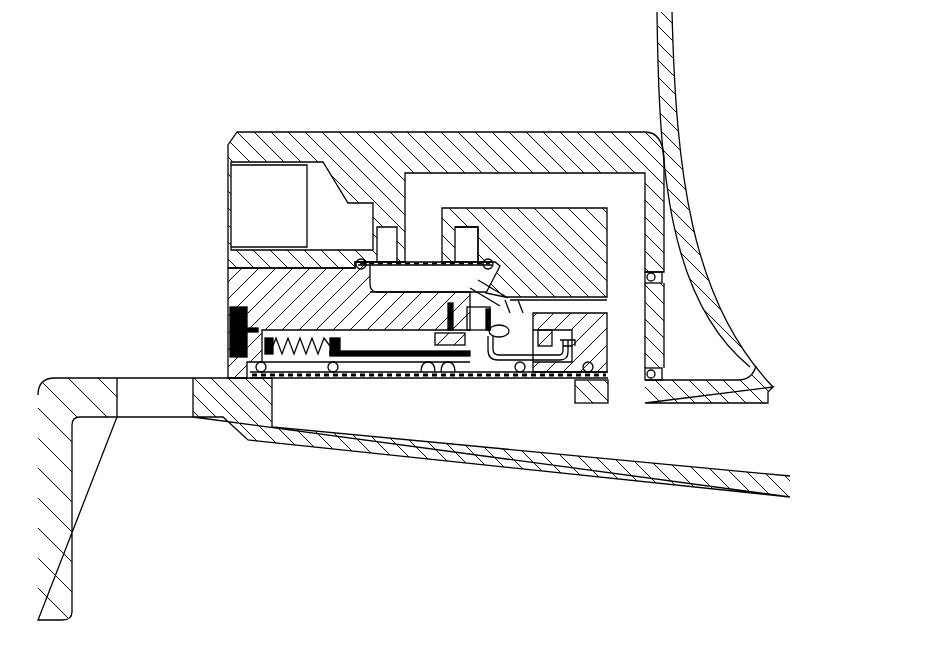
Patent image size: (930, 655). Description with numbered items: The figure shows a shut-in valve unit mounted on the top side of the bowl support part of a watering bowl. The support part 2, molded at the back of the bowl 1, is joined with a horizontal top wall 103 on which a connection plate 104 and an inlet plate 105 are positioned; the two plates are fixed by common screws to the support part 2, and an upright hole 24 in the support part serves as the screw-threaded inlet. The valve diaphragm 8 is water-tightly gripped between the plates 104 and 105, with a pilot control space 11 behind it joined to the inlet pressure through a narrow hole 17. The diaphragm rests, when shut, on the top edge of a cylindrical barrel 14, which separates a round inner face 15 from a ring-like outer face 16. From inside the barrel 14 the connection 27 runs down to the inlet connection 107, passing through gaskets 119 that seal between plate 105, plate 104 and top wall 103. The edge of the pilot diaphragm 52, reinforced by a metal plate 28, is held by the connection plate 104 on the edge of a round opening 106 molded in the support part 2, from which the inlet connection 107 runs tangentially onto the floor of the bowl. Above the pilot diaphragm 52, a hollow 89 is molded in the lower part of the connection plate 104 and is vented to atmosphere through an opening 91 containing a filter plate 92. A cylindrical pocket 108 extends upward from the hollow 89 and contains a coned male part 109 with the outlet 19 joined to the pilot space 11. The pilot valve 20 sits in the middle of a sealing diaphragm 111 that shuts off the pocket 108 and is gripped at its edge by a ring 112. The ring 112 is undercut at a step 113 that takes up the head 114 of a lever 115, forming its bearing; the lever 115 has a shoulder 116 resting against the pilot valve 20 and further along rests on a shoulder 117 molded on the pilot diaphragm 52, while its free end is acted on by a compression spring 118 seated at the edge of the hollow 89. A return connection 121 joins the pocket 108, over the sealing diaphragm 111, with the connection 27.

The bowl 1 is at (716, 306).
The support part 2 is at (53, 377).
The valve diaphragm 8 is at (421, 268).
The pilot control space 11 is at (444, 293).
The cylindrical barrel 14 is at (399, 250).
The round inner face 15 is at (425, 251).
The ring-like outer face 16 is at (387, 244).
The narrow hole 17 is at (466, 244).
The outlet 19 is at (478, 289).
The pilot valve 20 is at (489, 335).
The upright hole 24 is at (282, 223).
The connection 27 is at (530, 200).
The metal plate 28 is at (448, 376).
The pilot diaphragm 52 is at (365, 380).
The hollow 89 is at (291, 362).
The opening 91 is at (229, 329).
The filter plate 92 is at (229, 340).
The horizontal top wall 103 is at (133, 378).
The connection plate 104 is at (228, 290).
The inlet plate 105 is at (388, 143).
The round opening 106 is at (575, 392).
The inlet connection 107 is at (608, 455).
The cylindrical pocket 108 is at (478, 318).
The coned male part 109 is at (504, 306).
The sealing diaphragm 111 is at (529, 341).
The ring 112 is at (438, 348).
The step 113 is at (590, 334).
The head 114 is at (556, 372).
The lever 115 is at (400, 343).
The shoulder 116 is at (503, 358).
The shoulder 117 is at (426, 372).
The compression spring 118 is at (316, 350).
The gaskets 119 is at (668, 282).
The return connection 121 is at (598, 303).